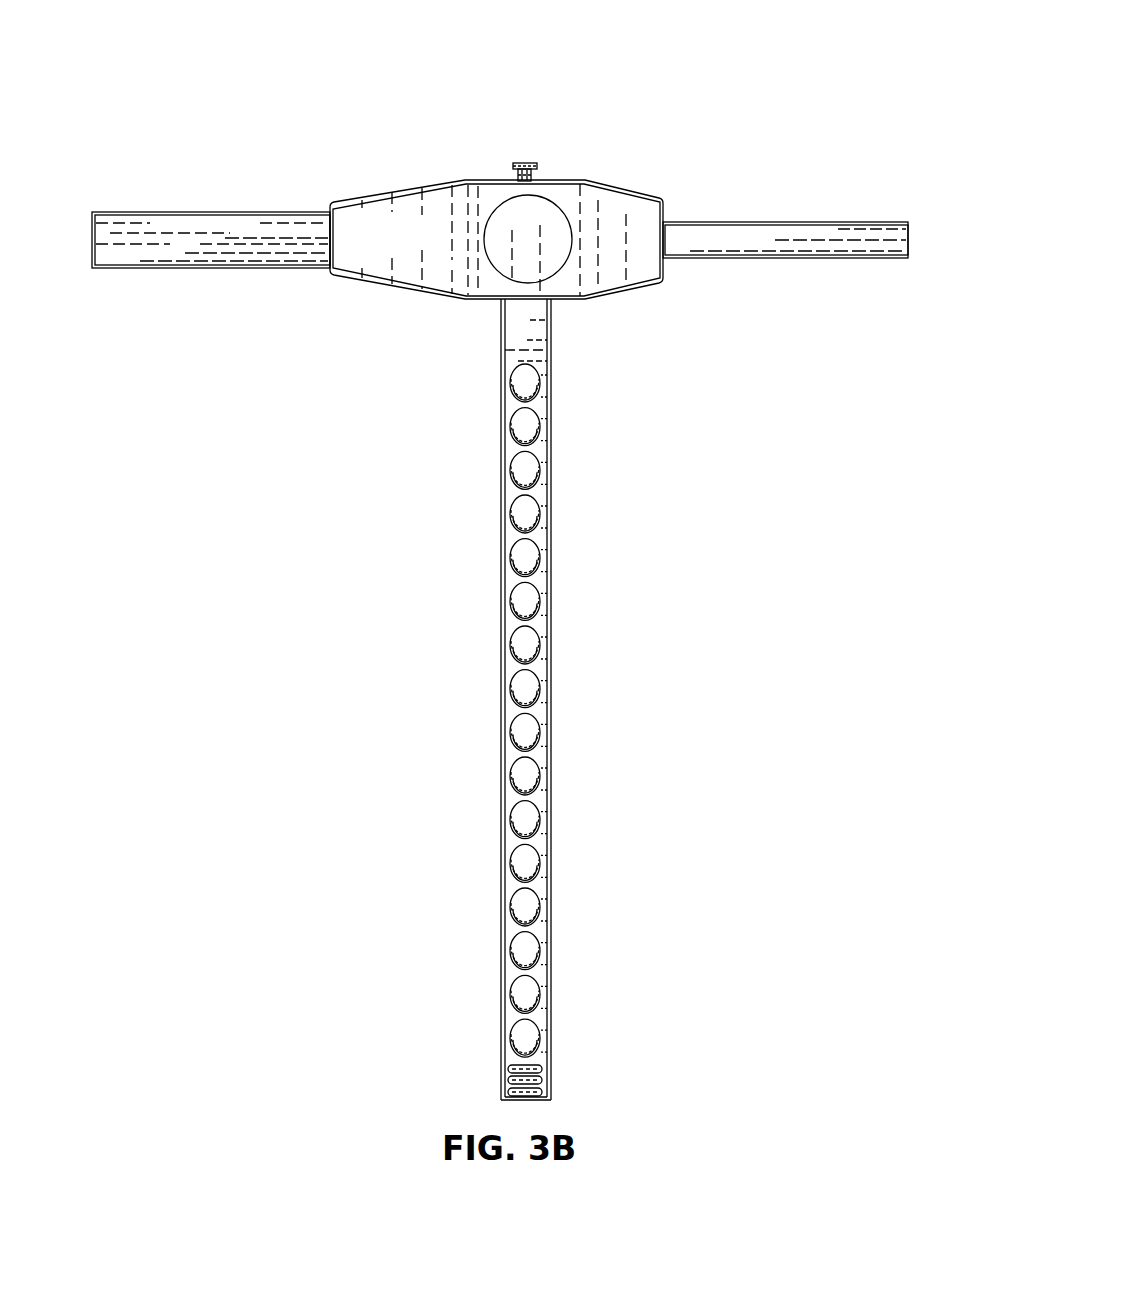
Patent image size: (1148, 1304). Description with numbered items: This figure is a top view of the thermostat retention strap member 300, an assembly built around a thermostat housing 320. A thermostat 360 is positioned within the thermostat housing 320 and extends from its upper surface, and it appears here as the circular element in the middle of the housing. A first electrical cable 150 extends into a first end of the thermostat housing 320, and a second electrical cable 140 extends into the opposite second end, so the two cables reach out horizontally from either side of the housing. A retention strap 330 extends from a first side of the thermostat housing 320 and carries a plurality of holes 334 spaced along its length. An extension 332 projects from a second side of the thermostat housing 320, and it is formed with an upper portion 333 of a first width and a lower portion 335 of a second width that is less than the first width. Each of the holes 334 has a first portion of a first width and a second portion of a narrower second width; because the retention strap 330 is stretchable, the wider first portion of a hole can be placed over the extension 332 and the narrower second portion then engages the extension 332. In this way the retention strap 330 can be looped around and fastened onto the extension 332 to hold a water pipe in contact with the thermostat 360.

The thermostat retention strap member 300 is at (745, 46).
The second electrical cable 140 is at (170, 255).
The first electrical cable 150 is at (823, 247).
The thermostat housing 320 is at (647, 205).
The retention strap 330 is at (569, 699).
The extension 332 is at (525, 163).
The upper portion 333 is at (512, 170).
The holes 334 is at (525, 640).
The lower portion 335 is at (537, 177).
The thermostat 360 is at (547, 227).